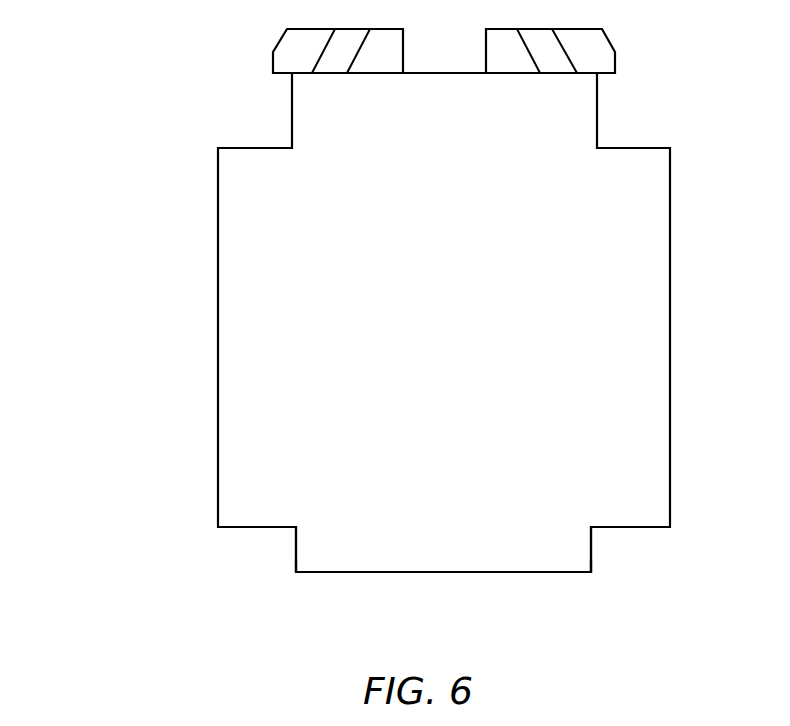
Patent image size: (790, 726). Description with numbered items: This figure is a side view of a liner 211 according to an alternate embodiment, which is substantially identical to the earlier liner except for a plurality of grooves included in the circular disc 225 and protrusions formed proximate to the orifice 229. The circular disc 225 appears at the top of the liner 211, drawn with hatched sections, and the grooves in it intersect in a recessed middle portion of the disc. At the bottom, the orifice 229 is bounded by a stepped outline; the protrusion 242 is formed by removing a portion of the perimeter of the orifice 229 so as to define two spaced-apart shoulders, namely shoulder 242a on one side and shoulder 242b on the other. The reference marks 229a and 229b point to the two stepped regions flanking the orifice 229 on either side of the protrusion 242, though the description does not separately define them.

The liner 211 is at (96, 142).
The circular disc 225 is at (612, 45).
The orifice 229 is at (426, 581).
The left step 229a is at (226, 550).
The right step 229b is at (651, 550).
The protrusion 242 is at (508, 556).
The shoulder 242a is at (294, 563).
The shoulder 242b is at (593, 568).